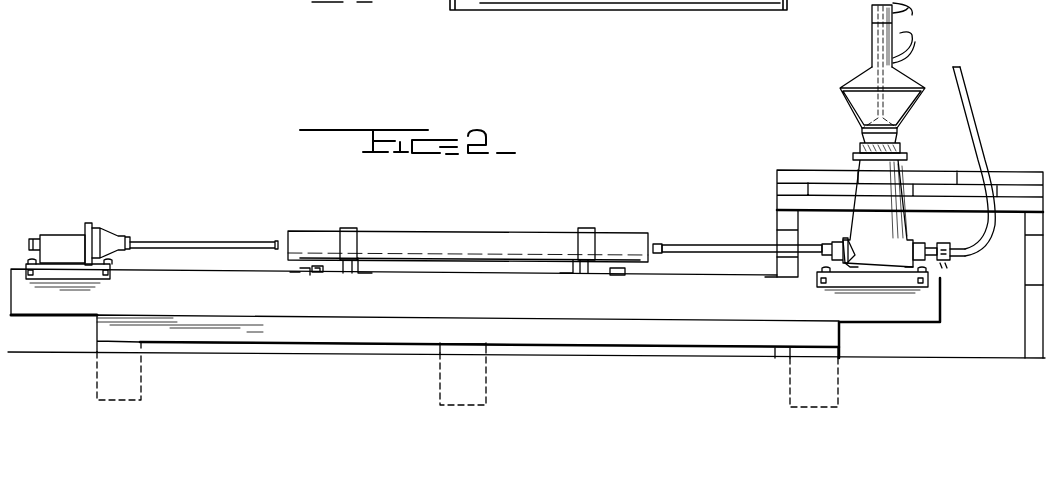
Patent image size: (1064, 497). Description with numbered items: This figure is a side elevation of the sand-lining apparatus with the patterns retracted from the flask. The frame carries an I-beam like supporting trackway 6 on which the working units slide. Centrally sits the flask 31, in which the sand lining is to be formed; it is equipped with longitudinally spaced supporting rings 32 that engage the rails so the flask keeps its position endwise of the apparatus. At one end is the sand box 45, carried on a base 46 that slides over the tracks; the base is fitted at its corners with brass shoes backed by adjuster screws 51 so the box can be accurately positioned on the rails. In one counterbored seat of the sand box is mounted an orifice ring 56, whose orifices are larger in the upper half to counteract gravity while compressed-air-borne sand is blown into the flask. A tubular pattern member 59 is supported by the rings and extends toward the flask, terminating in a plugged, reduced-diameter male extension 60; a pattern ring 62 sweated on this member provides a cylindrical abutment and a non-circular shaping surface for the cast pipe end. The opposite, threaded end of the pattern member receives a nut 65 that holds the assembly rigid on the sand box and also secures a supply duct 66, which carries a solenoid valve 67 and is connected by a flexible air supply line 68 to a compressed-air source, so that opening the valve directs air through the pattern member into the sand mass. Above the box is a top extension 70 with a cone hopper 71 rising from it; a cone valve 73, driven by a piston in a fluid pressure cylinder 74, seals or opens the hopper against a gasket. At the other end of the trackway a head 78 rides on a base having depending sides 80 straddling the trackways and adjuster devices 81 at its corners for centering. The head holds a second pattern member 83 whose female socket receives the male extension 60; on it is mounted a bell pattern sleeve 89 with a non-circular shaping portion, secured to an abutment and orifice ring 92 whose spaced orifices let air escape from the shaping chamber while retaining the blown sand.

The supporting trackway 6 is at (432, 290).
The flask 31 is at (493, 235).
The supporting rings 32 is at (352, 227).
The sand box 45 is at (865, 177).
The base 46 is at (875, 275).
The adjuster screw 51 is at (823, 284).
The orifice ring 56 is at (853, 243).
The tubular pattern member 59 is at (723, 247).
The male extension 60 is at (658, 243).
The pattern ring 62 is at (836, 243).
The nut 65 is at (917, 245).
The supply duct 66 is at (938, 245).
The solenoid valve 67 is at (956, 254).
The flexible air supply line 68 is at (968, 113).
The top extension 70 is at (903, 150).
The cone hopper 71 is at (847, 92).
The cone valve 73 is at (870, 122).
The fluid pressure cylinder 74 is at (872, 42).
The head 78 is at (62, 242).
The depending sides 80 is at (77, 273).
The adjuster devices 81 is at (112, 265).
The pattern member 83 is at (202, 243).
The bell pattern sleeve 89 is at (118, 238).
The abutment and orifice ring 92 is at (97, 235).